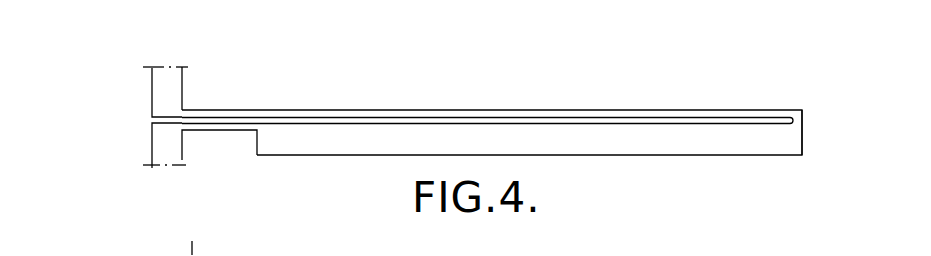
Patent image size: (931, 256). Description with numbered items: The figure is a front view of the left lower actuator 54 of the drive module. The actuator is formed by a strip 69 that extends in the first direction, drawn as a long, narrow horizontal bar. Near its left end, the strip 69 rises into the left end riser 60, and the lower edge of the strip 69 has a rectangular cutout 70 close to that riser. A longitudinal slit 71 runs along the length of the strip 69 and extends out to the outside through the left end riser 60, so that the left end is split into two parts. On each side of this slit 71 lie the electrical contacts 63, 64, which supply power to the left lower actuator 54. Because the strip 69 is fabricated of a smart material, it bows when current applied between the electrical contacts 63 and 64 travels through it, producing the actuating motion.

The left lower actuator 54 is at (652, 168).
The left end riser 60 is at (192, 82).
The electrical contact 63 is at (165, 83).
The electrical contact 64 is at (163, 148).
The strip 69 is at (766, 135).
The rectangular cutout 70 is at (230, 147).
The longitudinal slit 71 is at (424, 124).